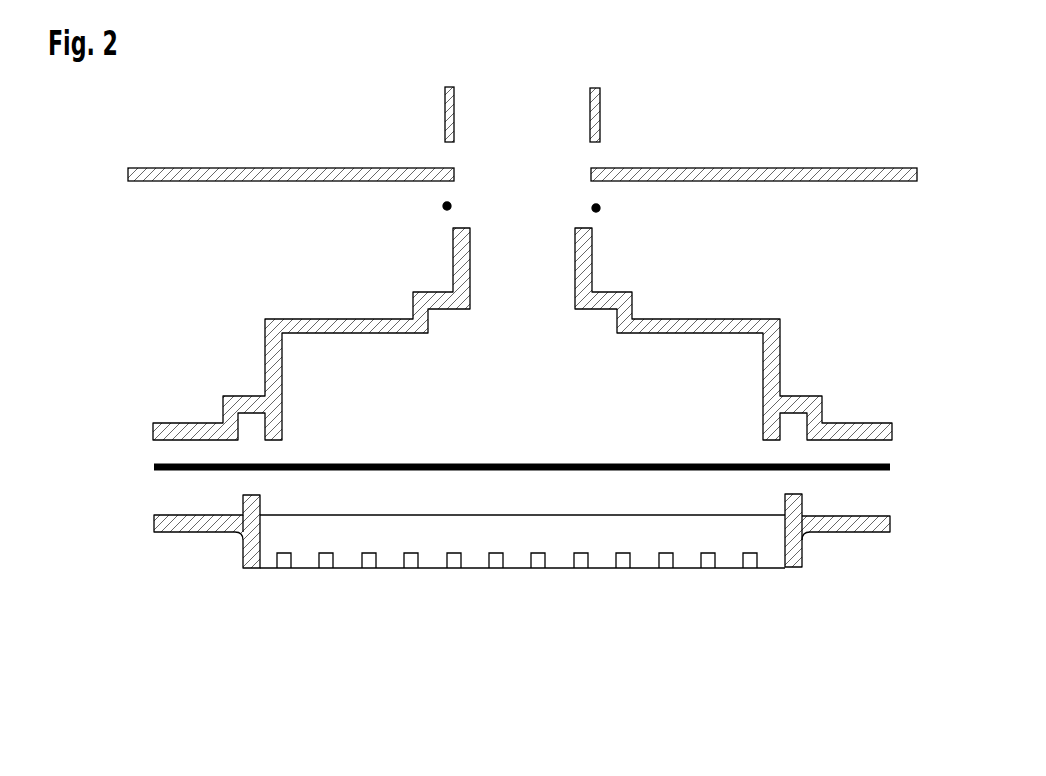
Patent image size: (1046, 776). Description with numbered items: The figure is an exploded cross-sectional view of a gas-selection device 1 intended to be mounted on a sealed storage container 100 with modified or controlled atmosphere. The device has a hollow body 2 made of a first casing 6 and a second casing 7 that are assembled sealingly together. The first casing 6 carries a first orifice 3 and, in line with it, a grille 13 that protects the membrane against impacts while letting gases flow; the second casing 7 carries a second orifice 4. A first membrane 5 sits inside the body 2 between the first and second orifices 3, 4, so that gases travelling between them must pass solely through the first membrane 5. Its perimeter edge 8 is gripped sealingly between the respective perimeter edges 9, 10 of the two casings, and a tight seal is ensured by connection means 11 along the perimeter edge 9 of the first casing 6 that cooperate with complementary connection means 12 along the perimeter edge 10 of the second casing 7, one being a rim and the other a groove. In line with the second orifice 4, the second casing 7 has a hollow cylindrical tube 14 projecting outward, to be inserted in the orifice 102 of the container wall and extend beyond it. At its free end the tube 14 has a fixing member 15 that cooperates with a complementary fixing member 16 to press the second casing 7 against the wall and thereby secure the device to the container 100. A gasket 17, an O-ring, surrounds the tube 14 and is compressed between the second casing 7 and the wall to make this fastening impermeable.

The gas-selection device 1 is at (185, 577).
The hollow body 2 is at (95, 375).
The first orifice 3 is at (587, 530).
The second orifice 4 is at (518, 312).
The first membrane 5 is at (697, 470).
The first casing 6 is at (160, 524).
The second casing 7 is at (200, 430).
The perimeter edge of the first membrane 8 is at (870, 463).
The perimeter edge of the first casing 9 is at (850, 520).
The perimeter edge of the second casing 10 is at (865, 428).
The connection means 11 is at (795, 500).
The complementary connection means 12 is at (793, 425).
The grille 13 is at (490, 557).
The hollow cylindrical tube 14 is at (584, 283).
The fixing member 15 is at (591, 262).
The complementary fixing member 16 is at (447, 120).
The gasket 17 is at (443, 208).
The sealed storage container 100 is at (760, 173).
The orifice of the wall 102 is at (565, 172).